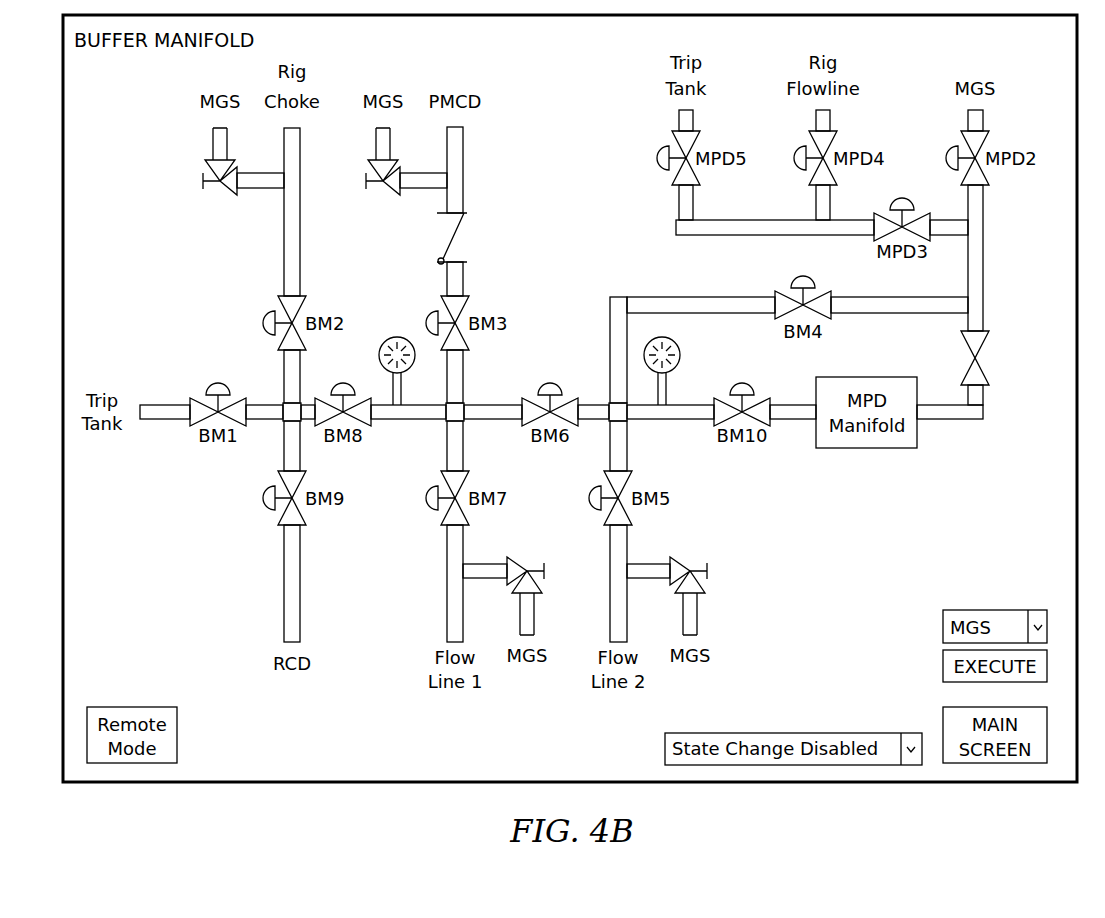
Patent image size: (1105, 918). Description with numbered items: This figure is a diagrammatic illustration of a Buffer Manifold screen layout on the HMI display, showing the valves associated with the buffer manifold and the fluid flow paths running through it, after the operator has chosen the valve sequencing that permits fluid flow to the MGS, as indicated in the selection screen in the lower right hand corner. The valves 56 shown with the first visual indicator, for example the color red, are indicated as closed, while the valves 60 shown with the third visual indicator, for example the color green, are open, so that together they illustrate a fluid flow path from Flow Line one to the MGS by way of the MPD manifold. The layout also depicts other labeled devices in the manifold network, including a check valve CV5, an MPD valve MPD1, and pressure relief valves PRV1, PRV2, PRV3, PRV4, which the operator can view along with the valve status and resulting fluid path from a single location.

The valves 56 is at (258, 320).
The valves 60 is at (550, 383).
The check valve CV5 is at (475, 238).
The MPD valve MPD1 is at (999, 358).
The pressure relief valve PRV1 is at (504, 586).
The pressure relief valve PRV2 is at (667, 586).
The pressure relief valve PRV3 is at (241, 172).
The pressure relief valve PRV4 is at (404, 172).